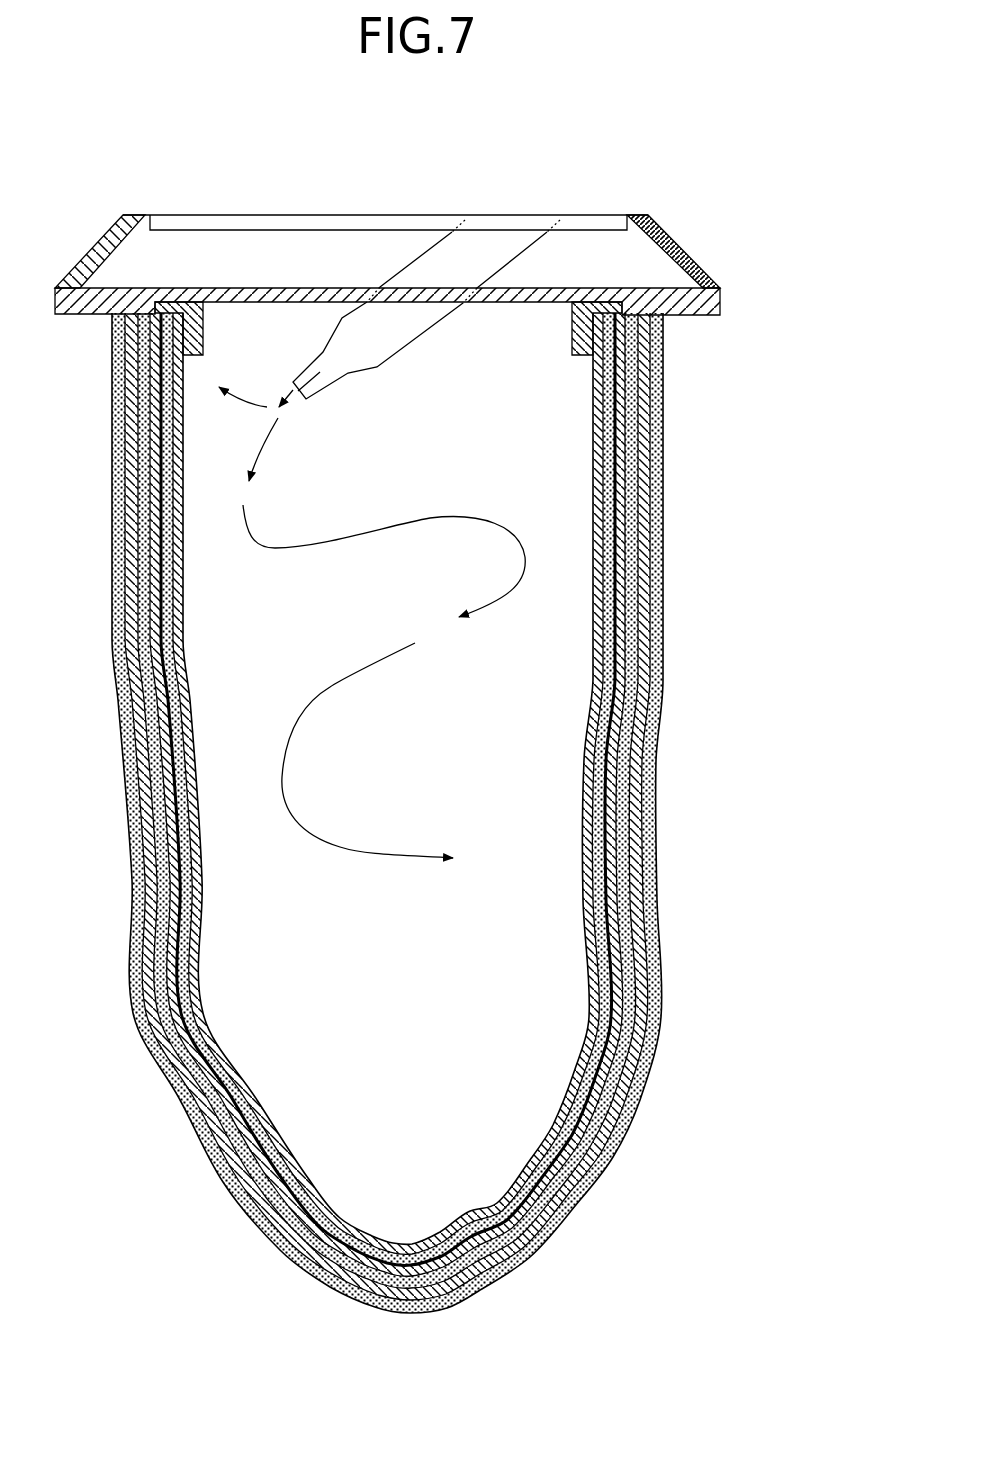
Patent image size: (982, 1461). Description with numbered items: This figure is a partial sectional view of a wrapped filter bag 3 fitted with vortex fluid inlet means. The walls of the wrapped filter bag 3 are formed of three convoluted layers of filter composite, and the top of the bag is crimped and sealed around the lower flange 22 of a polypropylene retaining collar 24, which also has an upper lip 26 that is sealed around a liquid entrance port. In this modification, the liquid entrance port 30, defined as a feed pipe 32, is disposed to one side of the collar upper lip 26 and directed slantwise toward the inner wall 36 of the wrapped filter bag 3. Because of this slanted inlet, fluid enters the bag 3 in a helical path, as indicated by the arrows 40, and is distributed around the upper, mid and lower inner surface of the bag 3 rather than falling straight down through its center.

The wrapped filter bag 3 is at (663, 672).
The lower flange 22 is at (572, 320).
The retaining collar 24 is at (713, 285).
The upper lip 26 is at (650, 217).
The liquid entrance port 30 is at (503, 217).
The feed pipe 32 is at (497, 257).
The inner wall 36 is at (188, 490).
The arrows 40 is at (443, 518).